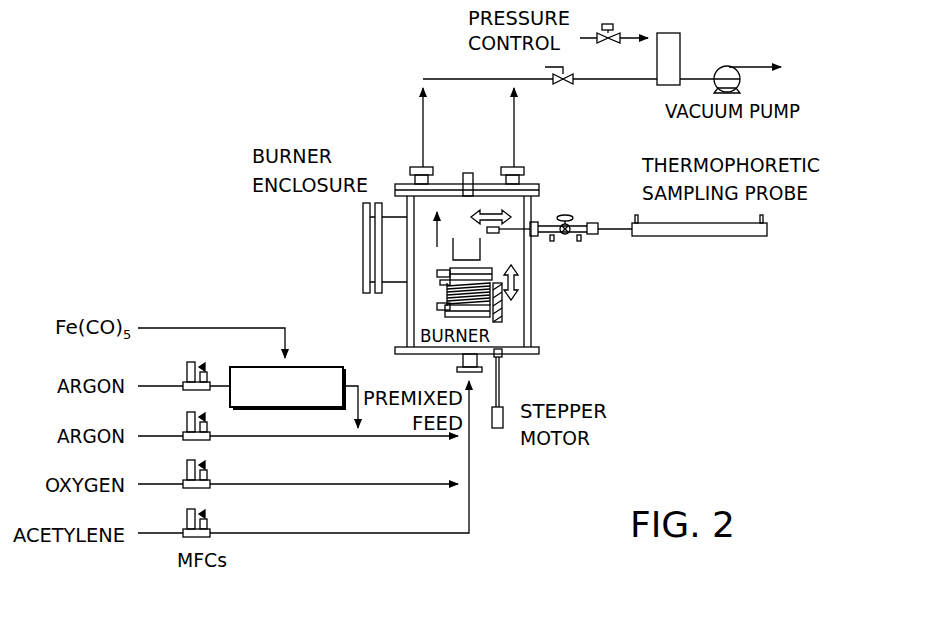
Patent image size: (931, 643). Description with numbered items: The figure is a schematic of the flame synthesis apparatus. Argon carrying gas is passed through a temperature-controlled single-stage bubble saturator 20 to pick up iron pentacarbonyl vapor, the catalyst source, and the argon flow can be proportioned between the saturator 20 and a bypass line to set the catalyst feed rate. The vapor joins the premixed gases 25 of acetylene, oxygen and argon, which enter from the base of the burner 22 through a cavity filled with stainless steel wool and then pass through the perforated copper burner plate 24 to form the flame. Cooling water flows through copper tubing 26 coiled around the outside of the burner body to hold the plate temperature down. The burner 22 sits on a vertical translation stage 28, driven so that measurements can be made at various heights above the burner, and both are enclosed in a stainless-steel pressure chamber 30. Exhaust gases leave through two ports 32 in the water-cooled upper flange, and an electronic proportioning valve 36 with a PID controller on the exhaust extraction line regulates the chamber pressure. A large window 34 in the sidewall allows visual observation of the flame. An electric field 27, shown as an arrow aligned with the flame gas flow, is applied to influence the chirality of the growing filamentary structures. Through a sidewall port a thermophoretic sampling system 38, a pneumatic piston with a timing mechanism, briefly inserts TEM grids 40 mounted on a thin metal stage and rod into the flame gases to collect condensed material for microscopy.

The bubble saturator 20 is at (325, 365).
The burner 22 is at (422, 304).
The burner plate 24 is at (452, 272).
The premixed gases 25 is at (468, 427).
The copper tubing 26 is at (500, 302).
The electric field 27 is at (435, 235).
The vertical translation stage 28 is at (500, 323).
The pressure chamber 30 is at (532, 287).
The ports 32 is at (434, 168).
The window 34 is at (362, 215).
The electronic proportioning valve 36 is at (567, 86).
The thermophoretic sampling system 38 is at (643, 243).
The TEM grids 40 is at (499, 233).